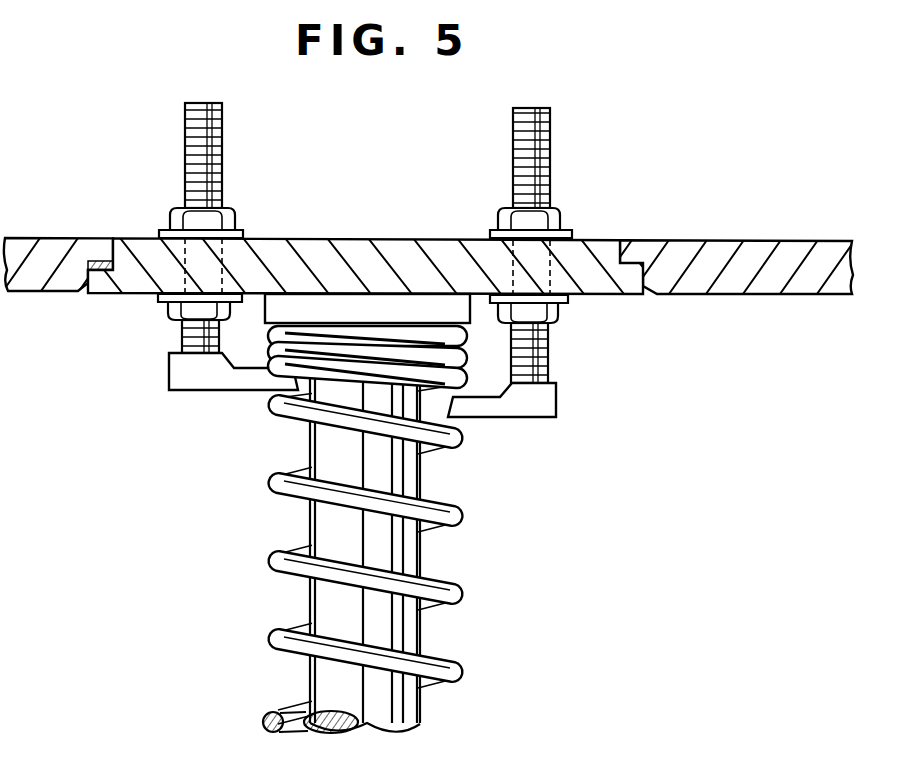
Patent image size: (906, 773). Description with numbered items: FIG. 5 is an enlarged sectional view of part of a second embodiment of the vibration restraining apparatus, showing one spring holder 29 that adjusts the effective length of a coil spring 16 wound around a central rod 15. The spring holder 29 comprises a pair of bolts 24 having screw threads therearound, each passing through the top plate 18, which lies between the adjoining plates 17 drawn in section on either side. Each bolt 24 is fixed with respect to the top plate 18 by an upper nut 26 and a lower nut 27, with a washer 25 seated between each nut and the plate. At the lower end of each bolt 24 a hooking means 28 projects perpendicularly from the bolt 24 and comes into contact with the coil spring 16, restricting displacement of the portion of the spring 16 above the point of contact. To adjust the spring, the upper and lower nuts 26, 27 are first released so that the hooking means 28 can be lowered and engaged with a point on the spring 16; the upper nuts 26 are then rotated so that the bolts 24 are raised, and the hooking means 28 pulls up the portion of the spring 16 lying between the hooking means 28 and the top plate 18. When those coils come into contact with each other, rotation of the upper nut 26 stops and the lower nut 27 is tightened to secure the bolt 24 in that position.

The guide rod 15 is at (305, 516).
The coil spring 16 is at (268, 568).
The panel plate 17 is at (48, 238).
The top plate 18 is at (358, 238).
The bolt 24 is at (305, 124).
The washer 25 is at (222, 188).
The upper nut 26 is at (168, 222).
The lower nut 27 is at (168, 301).
The hooking means 28 is at (195, 380).
The spring holder 29 is at (563, 139).